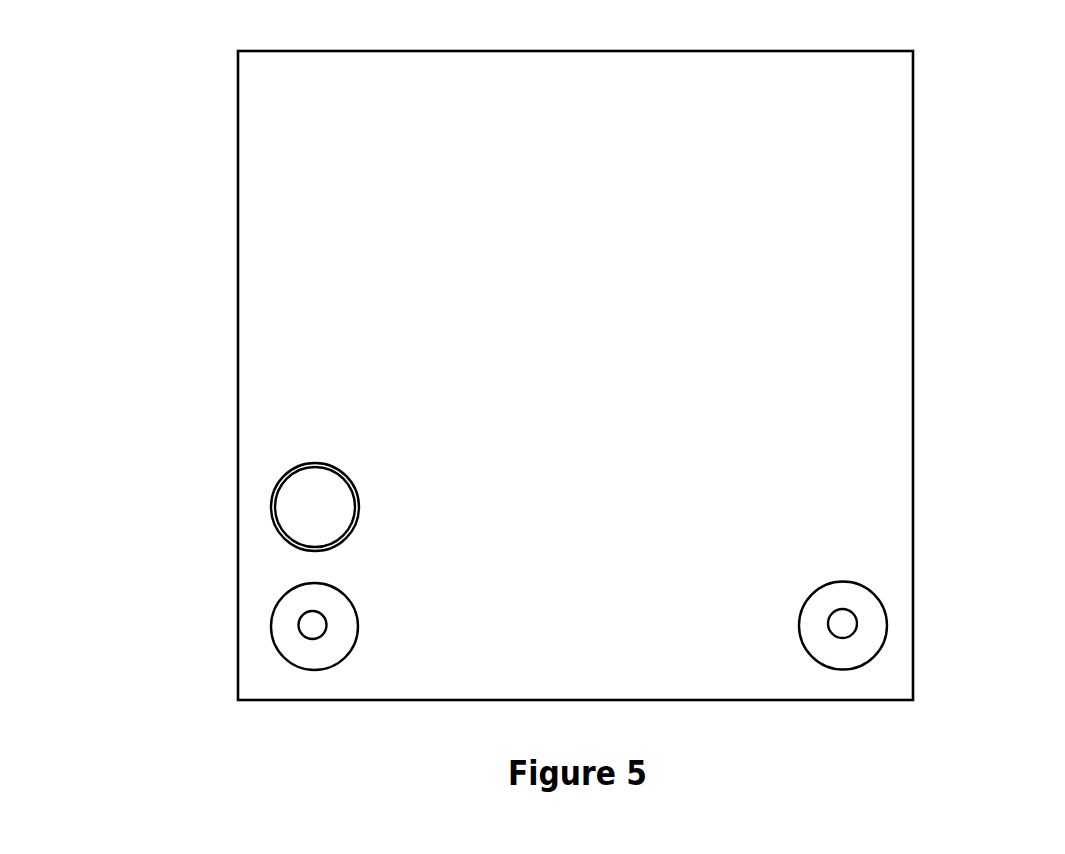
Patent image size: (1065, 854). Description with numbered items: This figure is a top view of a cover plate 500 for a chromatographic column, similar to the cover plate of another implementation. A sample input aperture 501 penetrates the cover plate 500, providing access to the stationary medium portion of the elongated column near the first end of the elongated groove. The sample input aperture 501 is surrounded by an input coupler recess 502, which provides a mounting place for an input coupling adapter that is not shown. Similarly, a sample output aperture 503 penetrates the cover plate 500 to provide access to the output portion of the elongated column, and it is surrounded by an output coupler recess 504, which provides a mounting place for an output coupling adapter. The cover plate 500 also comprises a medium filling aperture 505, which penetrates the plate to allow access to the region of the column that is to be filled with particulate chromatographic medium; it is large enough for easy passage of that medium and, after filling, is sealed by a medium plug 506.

The cover plate 500 is at (929, 226).
The sample input aperture 501 is at (310, 621).
The input coupler recess 502 is at (291, 649).
The sample output aperture 503 is at (840, 622).
The output coupler recess 504 is at (863, 649).
The medium filling aperture 505 is at (279, 472).
The medium plug 506 is at (315, 509).